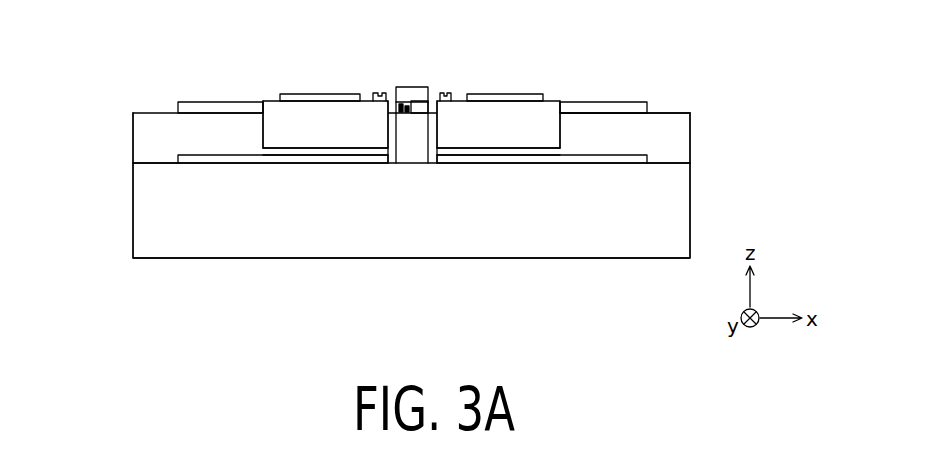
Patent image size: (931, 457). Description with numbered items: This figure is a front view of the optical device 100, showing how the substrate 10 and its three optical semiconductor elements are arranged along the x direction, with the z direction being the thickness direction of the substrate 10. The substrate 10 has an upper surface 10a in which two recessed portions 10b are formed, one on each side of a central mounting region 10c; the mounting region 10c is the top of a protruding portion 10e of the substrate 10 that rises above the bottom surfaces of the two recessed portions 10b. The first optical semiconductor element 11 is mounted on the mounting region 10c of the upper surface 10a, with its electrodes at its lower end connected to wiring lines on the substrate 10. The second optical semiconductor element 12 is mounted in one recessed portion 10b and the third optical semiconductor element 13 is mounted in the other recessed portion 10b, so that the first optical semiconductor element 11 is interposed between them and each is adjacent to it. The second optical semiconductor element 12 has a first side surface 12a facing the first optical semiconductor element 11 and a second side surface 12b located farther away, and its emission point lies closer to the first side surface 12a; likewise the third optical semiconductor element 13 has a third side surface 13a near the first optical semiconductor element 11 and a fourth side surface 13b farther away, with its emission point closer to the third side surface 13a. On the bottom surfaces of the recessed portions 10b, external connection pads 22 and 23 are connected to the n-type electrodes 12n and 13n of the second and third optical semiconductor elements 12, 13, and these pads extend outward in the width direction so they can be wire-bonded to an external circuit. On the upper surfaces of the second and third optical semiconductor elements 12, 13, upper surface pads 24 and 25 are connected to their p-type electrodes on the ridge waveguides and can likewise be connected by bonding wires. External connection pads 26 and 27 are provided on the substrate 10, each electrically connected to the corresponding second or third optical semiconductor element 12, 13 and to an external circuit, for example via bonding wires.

The optical device 100 is at (129, 58).
The substrate 10 is at (163, 130).
The upper surface 10a is at (663, 112).
The recessed portion 10b is at (153, 162).
The mounting region 10c is at (412, 115).
The protruding portion 10e is at (403, 130).
The first optical semiconductor element 11 is at (405, 95).
The second optical semiconductor element 12 is at (333, 125).
The first side surface 12a is at (388, 96).
The second side surface 12b is at (257, 133).
The n-type electrode 12n is at (330, 163).
The third optical semiconductor element 13 is at (485, 128).
The third side surface 13a is at (430, 100).
The fourth side surface 13b is at (565, 130).
The n-type electrode 13n is at (505, 163).
The external connection pad 22 is at (228, 163).
The external connection pad 23 is at (600, 163).
The upper surface pad 24 is at (297, 95).
The upper surface pad 25 is at (528, 93).
The external connection pad 26 is at (207, 107).
The external connection pad 27 is at (607, 107).